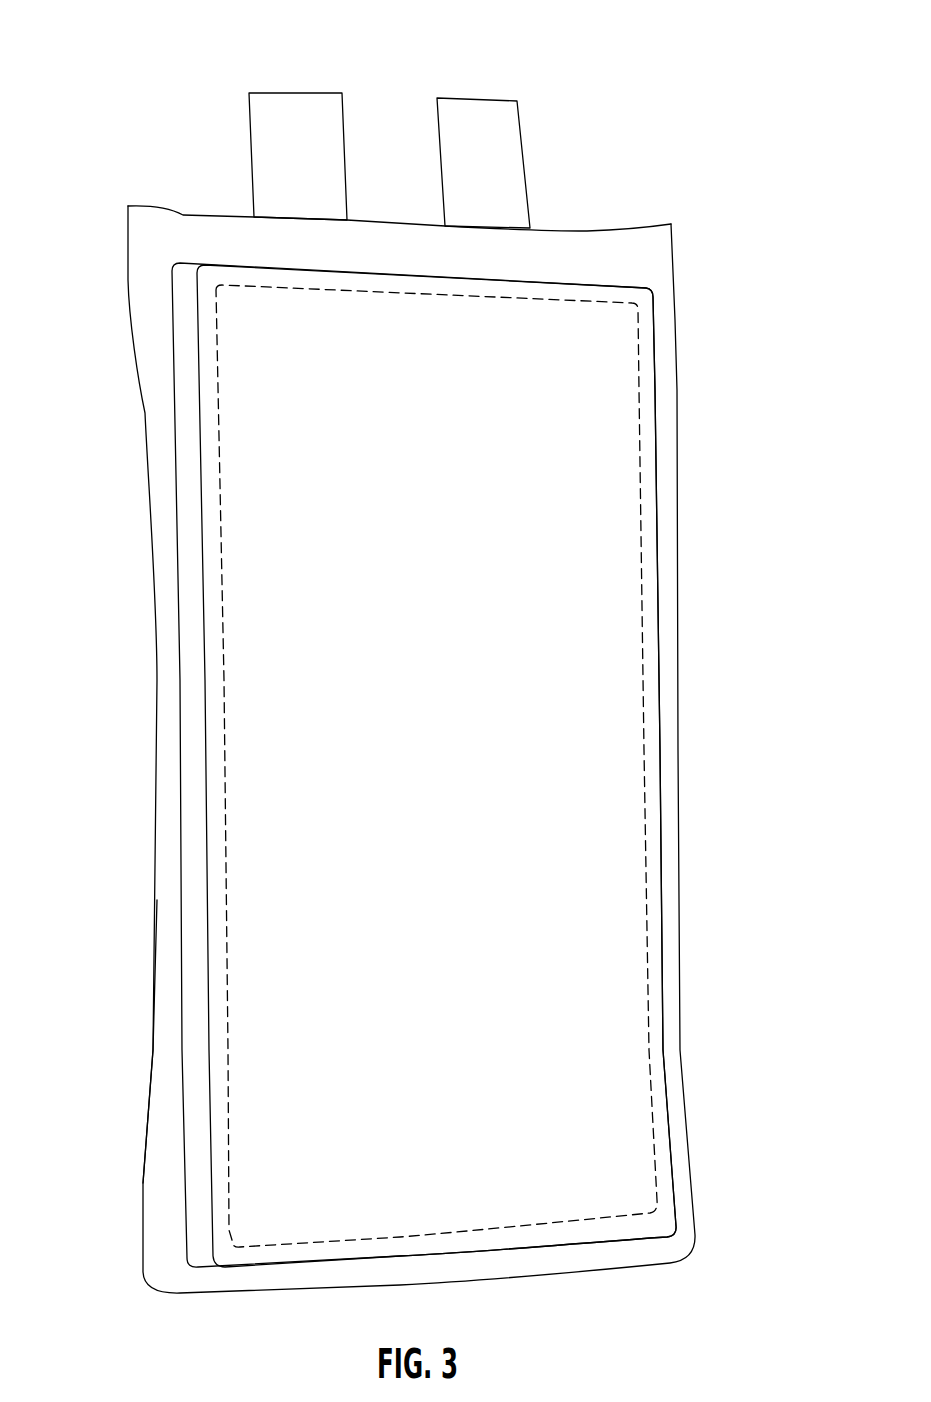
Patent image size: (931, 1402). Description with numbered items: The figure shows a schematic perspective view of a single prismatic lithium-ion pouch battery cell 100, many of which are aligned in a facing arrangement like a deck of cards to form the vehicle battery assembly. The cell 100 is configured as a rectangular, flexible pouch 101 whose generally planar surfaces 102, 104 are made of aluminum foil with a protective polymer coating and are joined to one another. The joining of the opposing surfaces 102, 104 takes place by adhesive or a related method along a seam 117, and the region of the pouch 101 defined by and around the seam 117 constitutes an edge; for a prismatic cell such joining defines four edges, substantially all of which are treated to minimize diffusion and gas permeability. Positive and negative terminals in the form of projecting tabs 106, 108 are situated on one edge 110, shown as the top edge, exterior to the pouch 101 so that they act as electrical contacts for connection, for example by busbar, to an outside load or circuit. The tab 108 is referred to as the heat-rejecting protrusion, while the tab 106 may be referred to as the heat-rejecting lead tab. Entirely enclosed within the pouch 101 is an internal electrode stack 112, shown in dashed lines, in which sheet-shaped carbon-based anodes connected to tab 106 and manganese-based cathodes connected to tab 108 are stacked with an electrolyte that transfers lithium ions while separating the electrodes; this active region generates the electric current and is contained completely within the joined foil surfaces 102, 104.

The lithium-ion pouch battery cell 100 is at (745, 38).
The pouch 101 is at (618, 487).
The planar surface 102 is at (618, 730).
The planar surface 104 is at (131, 342).
The tab 106 is at (480, 113).
The tab 108 is at (275, 113).
The edge 110 is at (587, 230).
The electrode stack 112 is at (650, 962).
The seam 117 is at (180, 1152).